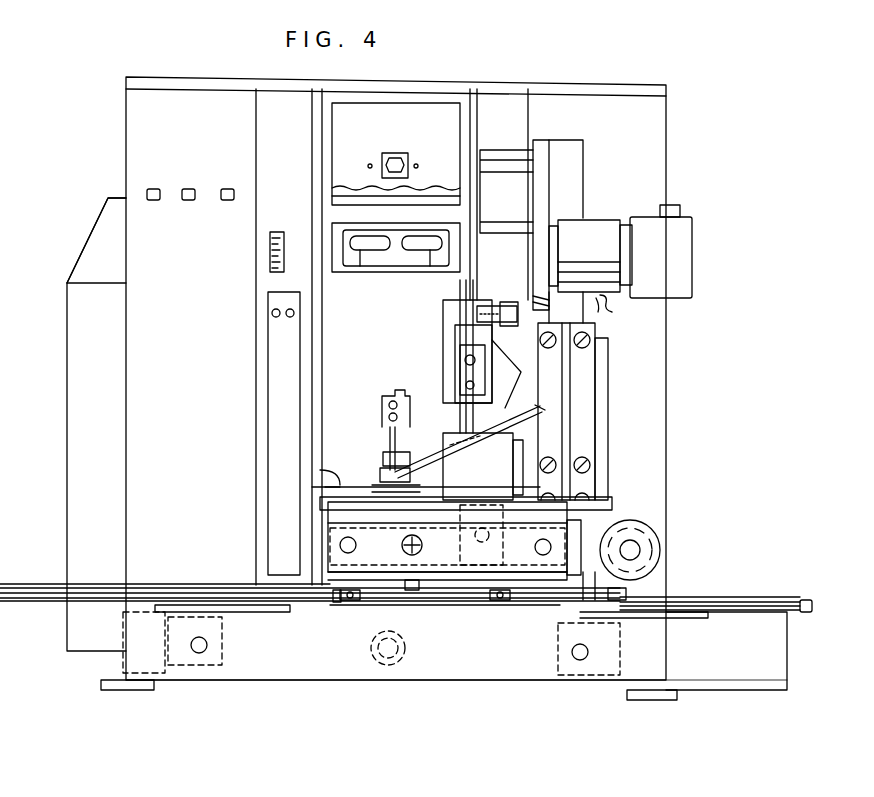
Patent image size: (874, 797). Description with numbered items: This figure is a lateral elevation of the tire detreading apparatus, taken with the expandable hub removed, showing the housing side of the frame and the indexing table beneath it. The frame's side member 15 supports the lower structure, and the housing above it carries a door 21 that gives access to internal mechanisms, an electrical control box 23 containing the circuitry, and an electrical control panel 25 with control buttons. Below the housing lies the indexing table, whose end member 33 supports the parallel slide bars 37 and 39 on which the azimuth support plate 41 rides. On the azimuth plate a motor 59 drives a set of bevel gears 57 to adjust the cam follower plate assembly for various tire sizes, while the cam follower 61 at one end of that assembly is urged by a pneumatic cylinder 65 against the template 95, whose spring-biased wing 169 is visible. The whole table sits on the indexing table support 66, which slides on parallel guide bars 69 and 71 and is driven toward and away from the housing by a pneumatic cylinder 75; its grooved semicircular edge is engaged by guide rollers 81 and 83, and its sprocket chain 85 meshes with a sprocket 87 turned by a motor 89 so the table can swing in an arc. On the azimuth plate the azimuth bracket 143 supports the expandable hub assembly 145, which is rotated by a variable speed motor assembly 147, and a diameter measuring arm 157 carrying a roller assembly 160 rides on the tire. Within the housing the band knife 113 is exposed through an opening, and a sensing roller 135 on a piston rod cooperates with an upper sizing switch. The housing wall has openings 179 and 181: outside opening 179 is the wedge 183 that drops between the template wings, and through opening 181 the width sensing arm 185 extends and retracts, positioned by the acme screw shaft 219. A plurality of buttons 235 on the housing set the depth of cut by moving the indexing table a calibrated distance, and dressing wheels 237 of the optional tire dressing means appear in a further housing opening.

The side member 15 is at (248, 676).
The door 21 is at (268, 358).
The electrical control box 23 is at (67, 440).
The electrical control panel 25 is at (93, 230).
The end member 33 is at (328, 530).
The slide bar 37 is at (340, 550).
The slide bar 39 is at (543, 555).
The azimuth support plate 41 is at (612, 503).
The bevel gears 57 is at (462, 545).
The motor 59 is at (452, 432).
The cam follower 61 is at (397, 547).
The pneumatic cylinder 65 is at (412, 555).
The indexing table support 66 is at (762, 597).
The guide bar 69 is at (207, 645).
The guide bar 71 is at (572, 652).
The pneumatic cylinder 75 is at (375, 653).
The guide rollers 81 is at (312, 605).
The guide rollers 83 is at (500, 600).
The sprocket chain 85 is at (808, 612).
The sprocket 87 is at (626, 592).
The motor 89 is at (660, 530).
The template 95 is at (318, 492).
The band knife 113 is at (437, 188).
The sensing roller 135 is at (396, 158).
The azimuth bracket 143 is at (590, 410).
The expandable hub assembly 145 is at (565, 183).
The variable speed motor assembly 147 is at (600, 228).
The diameter measuring arm 157 is at (440, 460).
The roller assembly 160 is at (388, 446).
The wing 169 is at (335, 485).
The opening 179 is at (388, 400).
The opening 181 is at (445, 330).
The wedge 183 is at (385, 465).
The width sensing arm 185 is at (495, 294).
The acme screw shaft 219 is at (448, 310).
The buttons 235 is at (153, 200).
The dressing wheels 237 is at (415, 243).